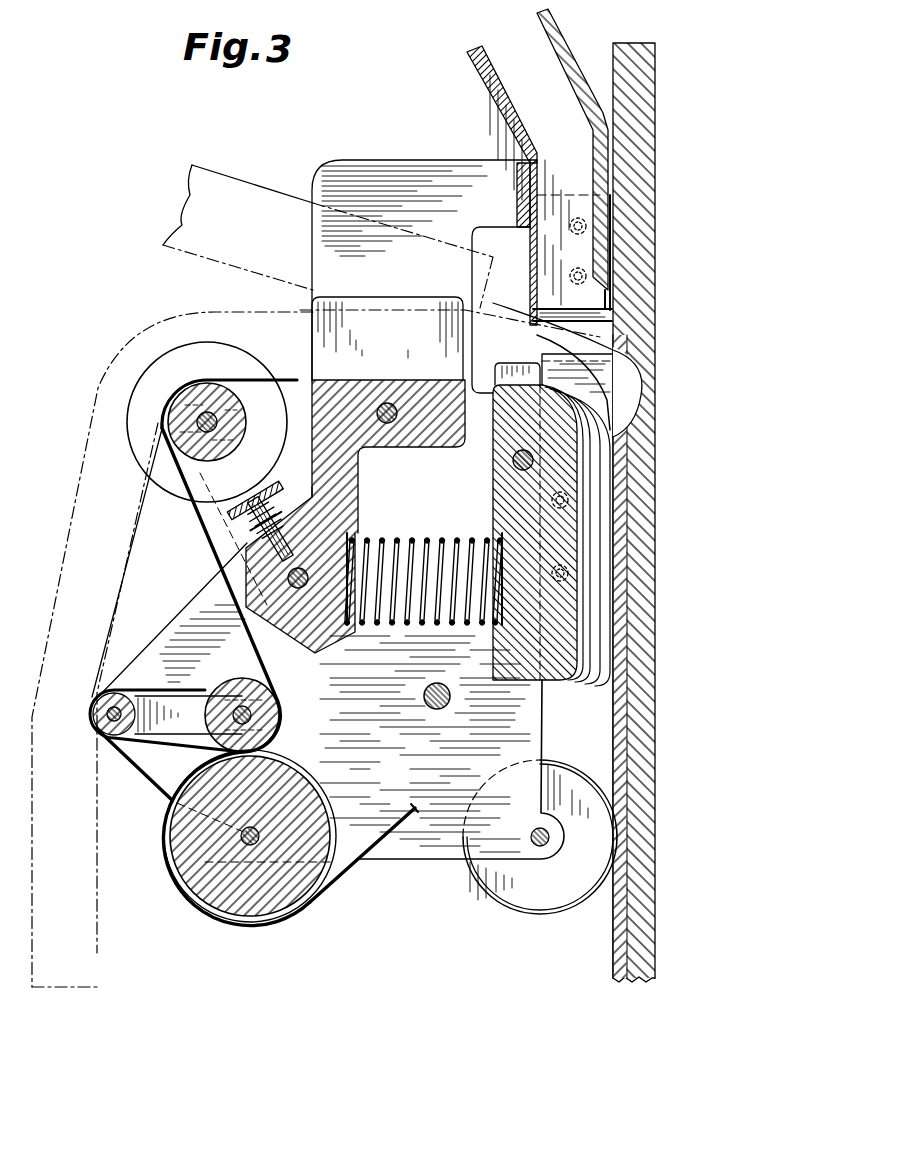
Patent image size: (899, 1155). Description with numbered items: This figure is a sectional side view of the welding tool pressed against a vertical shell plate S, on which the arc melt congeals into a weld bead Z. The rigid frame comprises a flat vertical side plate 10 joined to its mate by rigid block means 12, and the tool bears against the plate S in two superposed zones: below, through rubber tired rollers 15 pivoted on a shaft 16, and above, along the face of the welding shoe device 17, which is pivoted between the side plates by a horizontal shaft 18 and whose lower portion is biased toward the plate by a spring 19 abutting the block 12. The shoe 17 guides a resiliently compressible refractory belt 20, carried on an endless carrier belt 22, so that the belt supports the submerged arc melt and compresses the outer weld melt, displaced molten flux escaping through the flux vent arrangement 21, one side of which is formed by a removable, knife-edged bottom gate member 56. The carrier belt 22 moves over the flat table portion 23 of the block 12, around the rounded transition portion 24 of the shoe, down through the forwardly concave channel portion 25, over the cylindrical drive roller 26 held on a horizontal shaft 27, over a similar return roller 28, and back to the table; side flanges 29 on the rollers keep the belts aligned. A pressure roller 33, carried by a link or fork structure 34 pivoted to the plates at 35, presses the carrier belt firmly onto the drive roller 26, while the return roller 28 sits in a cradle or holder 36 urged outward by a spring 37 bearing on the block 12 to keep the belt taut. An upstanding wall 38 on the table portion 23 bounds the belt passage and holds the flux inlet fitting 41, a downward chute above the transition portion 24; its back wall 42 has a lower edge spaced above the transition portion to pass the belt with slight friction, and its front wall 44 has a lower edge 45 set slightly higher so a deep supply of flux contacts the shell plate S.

The shell plates S is at (657, 90).
The weld bead Z is at (625, 985).
The side plate 10 is at (182, 603).
The rigid block means 12 is at (296, 652).
The rubber tired rollers 15 is at (540, 915).
The shaft 16 is at (546, 831).
The welding shoe device 17 is at (680, 468).
The horizontal shaft 18 is at (513, 462).
The spring 19 is at (416, 628).
The refractory belt 20 is at (97, 953).
The flux vent arrangement 21 is at (608, 330).
The carrier belt 22 is at (392, 823).
The table portion 23 is at (388, 380).
The transition portion 24 is at (587, 432).
The channel portion 25 is at (593, 573).
The drive roller 26 is at (270, 907).
The horizontal shaft 27 is at (250, 845).
The return roller 28 is at (245, 420).
The side flanges 29 is at (240, 347).
The pressure roller 33 is at (236, 678).
The link or fork structure 34 is at (178, 695).
The pivot 35 is at (118, 703).
The cradle or holder 36 is at (240, 510).
The spring 37 is at (283, 510).
The wall 38 is at (378, 296).
The flux inlet fitting 41 is at (497, 108).
The back wall 42 is at (530, 257).
The front wall 44 is at (608, 173).
The lower edge 45 is at (604, 290).
The bottom gate member 56 is at (615, 368).